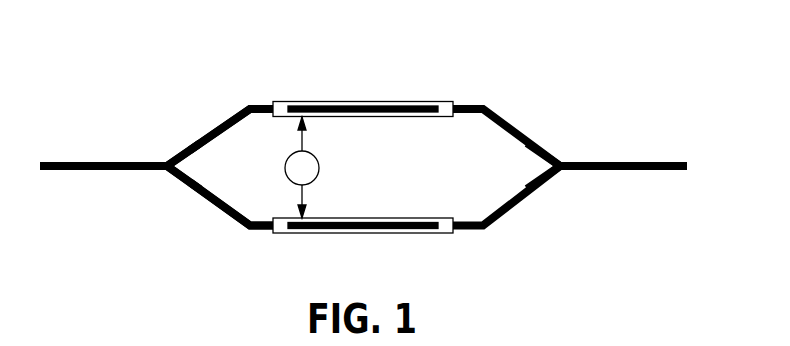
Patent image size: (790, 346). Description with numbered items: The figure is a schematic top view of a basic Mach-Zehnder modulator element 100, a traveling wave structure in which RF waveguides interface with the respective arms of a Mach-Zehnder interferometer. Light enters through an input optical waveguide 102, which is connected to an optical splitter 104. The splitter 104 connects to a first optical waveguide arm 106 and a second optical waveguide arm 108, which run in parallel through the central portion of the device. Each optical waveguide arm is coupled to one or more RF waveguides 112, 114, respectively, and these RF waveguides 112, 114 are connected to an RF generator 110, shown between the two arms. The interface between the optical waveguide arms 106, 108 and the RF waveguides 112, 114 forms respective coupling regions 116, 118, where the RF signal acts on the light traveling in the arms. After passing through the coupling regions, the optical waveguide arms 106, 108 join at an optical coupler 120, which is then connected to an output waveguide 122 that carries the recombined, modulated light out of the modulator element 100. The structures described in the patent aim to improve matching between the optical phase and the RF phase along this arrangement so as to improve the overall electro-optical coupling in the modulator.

The Mach-Zehnder modulator element 100 is at (363, 135).
The input optical waveguide 102 is at (98, 172).
The optical splitter 104 is at (163, 170).
The first optical waveguide arm 106 is at (227, 221).
The second optical waveguide arm 108 is at (193, 143).
The RF generator 110 is at (285, 173).
The RF waveguide 112 is at (327, 233).
The RF waveguide 114 is at (343, 102).
The coupling region 116 is at (442, 233).
The coupling region 118 is at (418, 102).
The optical coupler 120 is at (563, 170).
The output waveguide 122 is at (600, 162).